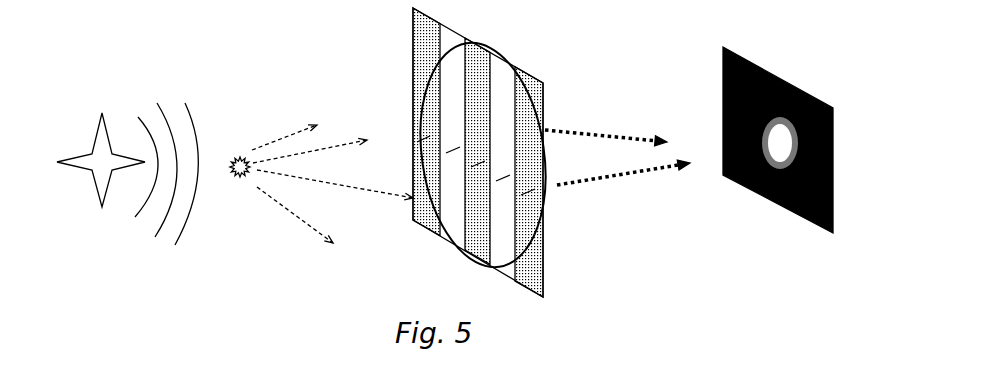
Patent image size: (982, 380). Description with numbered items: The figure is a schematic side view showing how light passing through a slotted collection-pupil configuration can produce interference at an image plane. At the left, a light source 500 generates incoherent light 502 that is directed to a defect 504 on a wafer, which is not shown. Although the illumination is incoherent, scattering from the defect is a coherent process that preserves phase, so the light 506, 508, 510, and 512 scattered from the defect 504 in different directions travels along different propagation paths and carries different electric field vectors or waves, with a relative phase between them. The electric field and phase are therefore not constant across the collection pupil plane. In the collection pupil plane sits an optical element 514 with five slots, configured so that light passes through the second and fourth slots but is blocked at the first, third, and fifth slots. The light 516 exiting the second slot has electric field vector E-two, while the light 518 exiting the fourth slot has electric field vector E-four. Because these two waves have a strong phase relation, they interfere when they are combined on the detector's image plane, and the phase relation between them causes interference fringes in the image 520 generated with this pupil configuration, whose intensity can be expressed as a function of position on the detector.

The light source 500 is at (101, 119).
The incoherent light 502 is at (183, 105).
The defect 504 is at (242, 153).
The scattered light 506 is at (290, 135).
The scattered light 508 is at (320, 151).
The scattered light 510 is at (367, 193).
The scattered light 512 is at (302, 223).
The optical element 514 is at (530, 78).
The light exiting slot 2 516 is at (630, 138).
The light exiting slot 4 518 is at (640, 172).
The image 520 is at (788, 80).